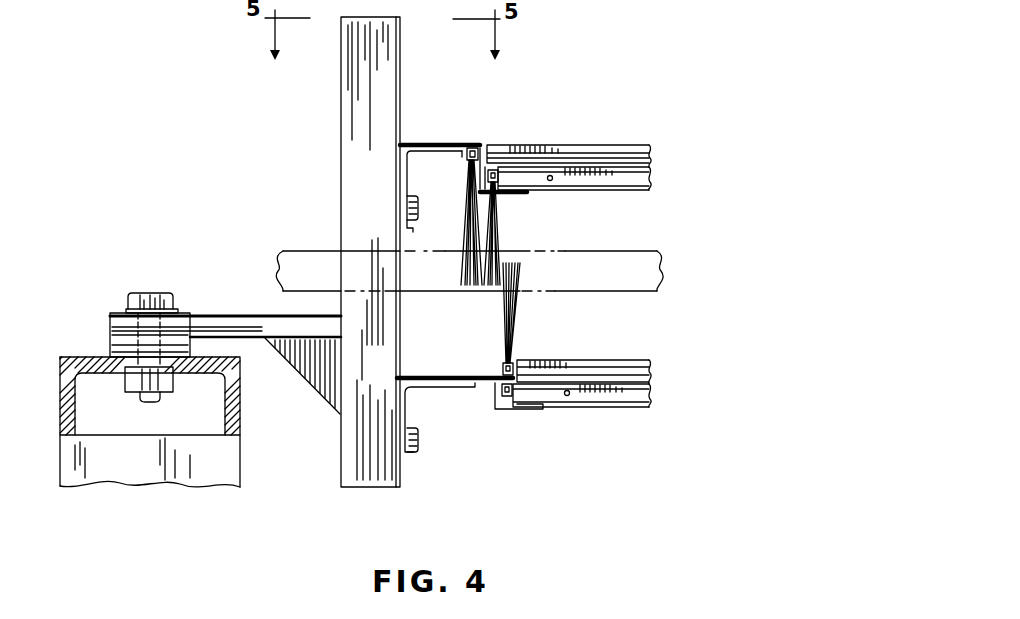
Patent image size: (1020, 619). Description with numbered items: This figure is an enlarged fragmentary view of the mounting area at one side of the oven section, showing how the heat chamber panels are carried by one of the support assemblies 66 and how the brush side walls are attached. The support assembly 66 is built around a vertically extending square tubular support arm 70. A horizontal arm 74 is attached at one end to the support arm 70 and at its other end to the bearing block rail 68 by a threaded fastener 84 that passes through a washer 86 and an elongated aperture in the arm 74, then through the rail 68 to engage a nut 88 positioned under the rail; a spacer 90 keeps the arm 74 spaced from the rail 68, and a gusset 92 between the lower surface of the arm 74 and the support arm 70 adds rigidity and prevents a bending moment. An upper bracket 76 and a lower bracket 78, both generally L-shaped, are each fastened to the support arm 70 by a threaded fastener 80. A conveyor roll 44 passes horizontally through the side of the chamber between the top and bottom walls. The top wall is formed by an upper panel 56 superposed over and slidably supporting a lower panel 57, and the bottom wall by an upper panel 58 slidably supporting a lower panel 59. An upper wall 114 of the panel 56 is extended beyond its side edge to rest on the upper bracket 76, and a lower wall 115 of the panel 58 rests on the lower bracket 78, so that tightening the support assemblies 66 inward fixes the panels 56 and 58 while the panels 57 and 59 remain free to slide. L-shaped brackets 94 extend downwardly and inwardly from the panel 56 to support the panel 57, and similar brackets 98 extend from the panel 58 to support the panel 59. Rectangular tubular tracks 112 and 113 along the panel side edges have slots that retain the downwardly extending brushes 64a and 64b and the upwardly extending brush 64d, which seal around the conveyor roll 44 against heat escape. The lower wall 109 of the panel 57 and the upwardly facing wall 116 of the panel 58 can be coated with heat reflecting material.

The conveyor rolls 44 is at (303, 250).
The upper panel 56 is at (630, 137).
The lower panel 57 is at (660, 181).
The upper panel 58 is at (660, 364).
The lower panel 59 is at (662, 395).
The downwardly extending brush 64a is at (468, 222).
The downwardly extending brush 64b is at (498, 243).
The upwardly extending brush 64d is at (517, 311).
The support assembly 66 is at (298, 112).
The bearing block rail 68 is at (72, 410).
The support arm 70 is at (352, 127).
The horizontal arm 74 is at (225, 315).
The upper bracket 76 is at (400, 170).
The lower bracket 78 is at (405, 404).
The threaded fastener 80 is at (418, 207).
The threaded fastener 84 is at (145, 292).
The washer 86 is at (128, 310).
The nut 88 is at (168, 385).
The spacer 90 is at (118, 346).
The gusset 92 is at (318, 373).
The L-shaped bracket 94 is at (527, 196).
The L-shaped bracket 98 is at (508, 408).
The lower wall 109 is at (624, 193).
The tubular track 112 is at (482, 152).
The tubular track 113 is at (500, 176).
The upper wall 114 is at (423, 143).
The lower wall 115 is at (418, 374).
The upwardly facing wall 116 is at (597, 360).